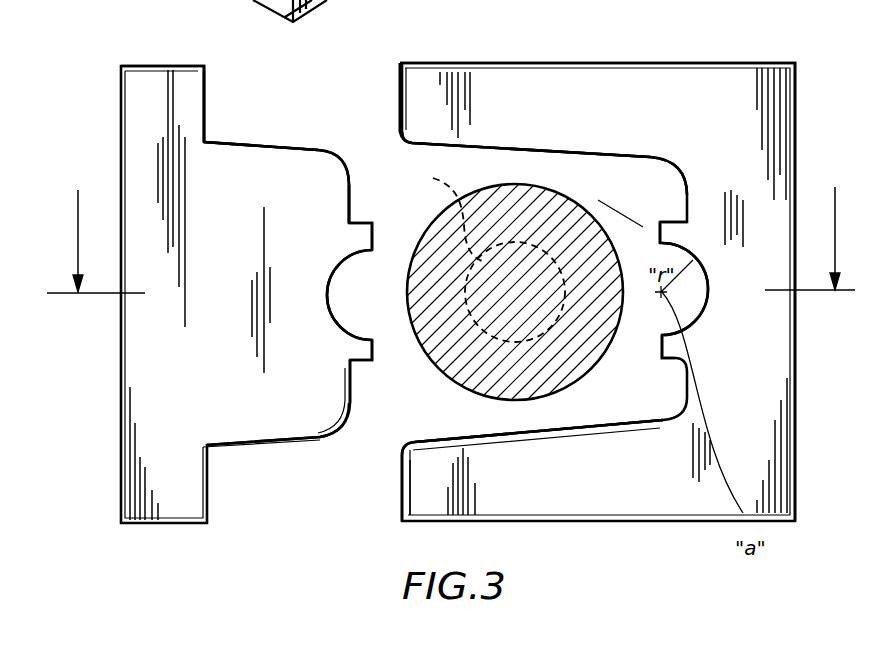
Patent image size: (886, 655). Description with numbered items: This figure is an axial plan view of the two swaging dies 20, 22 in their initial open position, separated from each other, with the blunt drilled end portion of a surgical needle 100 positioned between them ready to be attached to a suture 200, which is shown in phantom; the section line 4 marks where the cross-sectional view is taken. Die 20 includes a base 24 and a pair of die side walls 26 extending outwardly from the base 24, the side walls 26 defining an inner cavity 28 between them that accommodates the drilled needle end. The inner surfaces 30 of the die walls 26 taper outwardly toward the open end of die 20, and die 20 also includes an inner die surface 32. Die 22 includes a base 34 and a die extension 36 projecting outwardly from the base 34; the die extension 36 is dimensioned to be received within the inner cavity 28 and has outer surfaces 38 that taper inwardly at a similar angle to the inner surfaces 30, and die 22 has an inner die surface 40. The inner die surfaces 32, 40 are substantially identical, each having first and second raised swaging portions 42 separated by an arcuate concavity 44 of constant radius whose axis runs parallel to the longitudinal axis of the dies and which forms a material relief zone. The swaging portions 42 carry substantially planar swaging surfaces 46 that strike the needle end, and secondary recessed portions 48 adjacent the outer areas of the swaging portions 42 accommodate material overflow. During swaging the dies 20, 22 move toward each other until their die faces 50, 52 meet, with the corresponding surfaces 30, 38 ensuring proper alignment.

The die 20 is at (727, 63).
The die 22 is at (58, 0).
The base 24 is at (597, 292).
The die side walls 26 is at (531, 292).
The inner cavity 28 is at (528, 165).
The inner surfaces 30 is at (582, 158).
The inner die surface 32 is at (648, 231).
The base 34 is at (137, 131).
The die extension 36 is at (276, 182).
The outer surfaces 38 is at (240, 143).
The inner die surface 40 is at (372, 393).
The raised swaging portions 42 is at (313, 12).
The concavity 44 is at (354, 336).
The swaging surfaces 46 is at (377, 237).
The secondary recessed portions 48 is at (367, 382).
The die face 50 is at (397, 86).
The die face 52 is at (205, 100).
The surgical needle 100 is at (458, 388).
The suture 200 is at (479, 251).
The section line 4- 4 is at (451, 262).